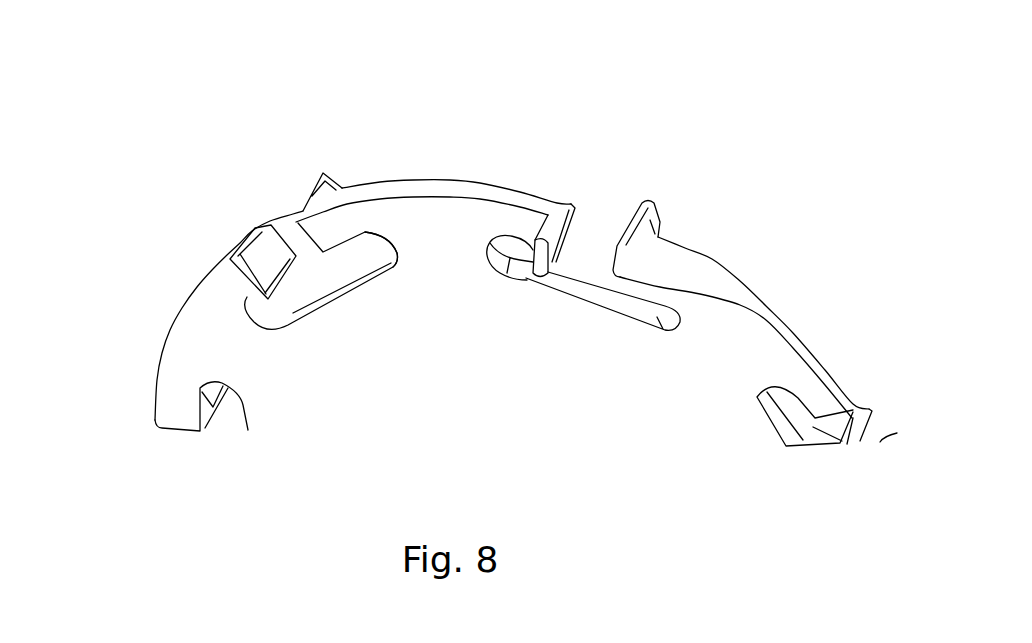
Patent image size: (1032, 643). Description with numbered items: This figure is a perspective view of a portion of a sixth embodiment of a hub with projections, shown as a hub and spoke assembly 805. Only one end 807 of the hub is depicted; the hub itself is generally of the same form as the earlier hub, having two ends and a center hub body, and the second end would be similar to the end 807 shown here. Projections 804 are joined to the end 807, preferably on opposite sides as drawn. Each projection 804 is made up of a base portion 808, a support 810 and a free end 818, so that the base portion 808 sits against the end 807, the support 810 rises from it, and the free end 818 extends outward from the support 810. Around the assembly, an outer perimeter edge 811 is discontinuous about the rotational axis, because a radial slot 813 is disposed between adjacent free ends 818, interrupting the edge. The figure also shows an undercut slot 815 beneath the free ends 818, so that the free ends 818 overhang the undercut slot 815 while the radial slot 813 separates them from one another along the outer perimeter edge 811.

The projection 804 is at (402, 178).
The hub and spoke assembly 805 is at (157, 352).
The end 807 is at (708, 260).
The base portion 808 is at (450, 272).
The support 810 is at (396, 250).
The outer perimeter edge 811 is at (663, 237).
The radial slot 813 is at (254, 224).
The undercut slot 815 is at (338, 295).
The free end 818 is at (323, 173).